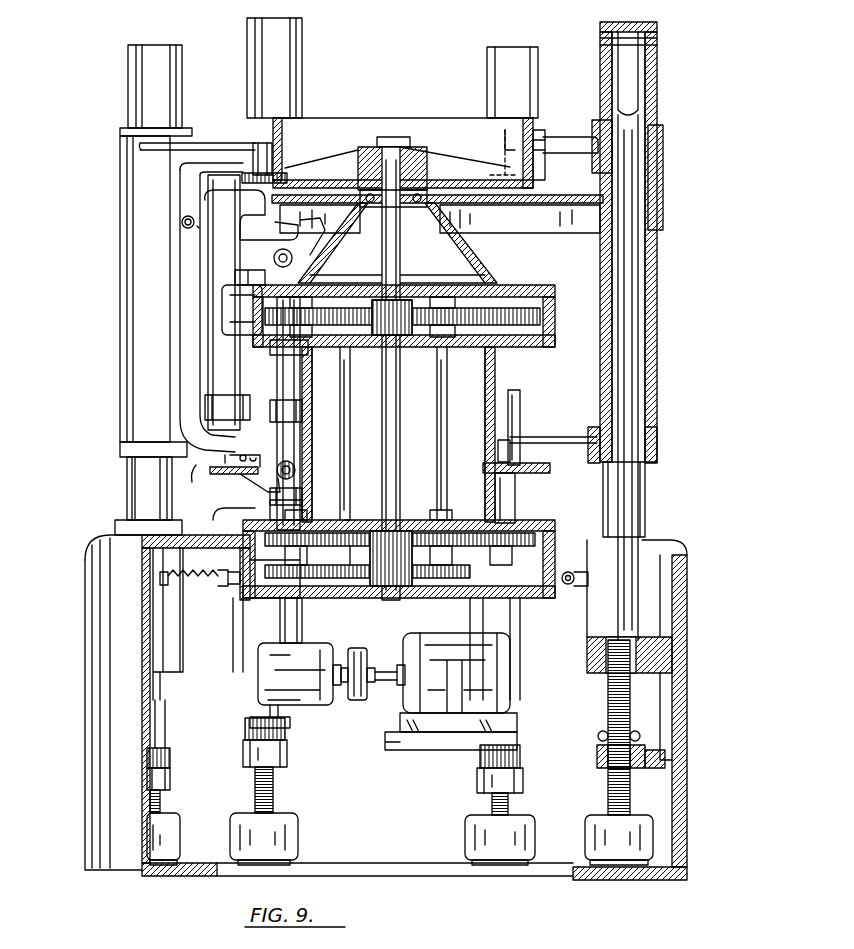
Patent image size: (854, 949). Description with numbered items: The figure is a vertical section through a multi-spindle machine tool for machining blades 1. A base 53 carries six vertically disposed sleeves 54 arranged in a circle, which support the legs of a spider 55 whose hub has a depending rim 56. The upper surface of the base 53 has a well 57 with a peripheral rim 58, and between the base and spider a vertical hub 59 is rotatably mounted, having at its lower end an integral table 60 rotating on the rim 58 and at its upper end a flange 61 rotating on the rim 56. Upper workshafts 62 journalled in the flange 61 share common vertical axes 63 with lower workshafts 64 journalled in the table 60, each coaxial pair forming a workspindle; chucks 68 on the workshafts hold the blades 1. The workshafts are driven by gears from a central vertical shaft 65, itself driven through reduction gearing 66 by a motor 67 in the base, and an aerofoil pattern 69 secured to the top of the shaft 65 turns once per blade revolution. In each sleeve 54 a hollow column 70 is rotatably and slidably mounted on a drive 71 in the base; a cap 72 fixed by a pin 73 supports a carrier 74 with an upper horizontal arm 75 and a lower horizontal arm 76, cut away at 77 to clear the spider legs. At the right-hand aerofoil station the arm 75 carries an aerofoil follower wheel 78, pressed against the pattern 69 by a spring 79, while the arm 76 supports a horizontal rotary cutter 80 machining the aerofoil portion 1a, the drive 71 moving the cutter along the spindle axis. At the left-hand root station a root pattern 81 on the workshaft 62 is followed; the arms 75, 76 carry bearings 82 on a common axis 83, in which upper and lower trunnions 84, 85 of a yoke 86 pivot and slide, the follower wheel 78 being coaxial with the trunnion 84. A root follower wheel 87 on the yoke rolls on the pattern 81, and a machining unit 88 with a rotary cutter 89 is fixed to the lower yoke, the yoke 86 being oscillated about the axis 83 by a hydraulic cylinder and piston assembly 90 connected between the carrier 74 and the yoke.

The blade 1 is at (320, 435).
The aerofoil portion 1a is at (500, 452).
The base 53 is at (386, 707).
The sleeve 54 is at (125, 483).
The spider 55 is at (545, 232).
The depending rim 56 is at (478, 280).
The well 57 is at (232, 600).
The peripheral rim 58 is at (545, 548).
The hub 59 is at (484, 403).
The table 60 is at (215, 520).
The flange 61 is at (240, 316).
The workshaft 62 is at (300, 387).
The vertical axis 63 is at (290, 378).
The workshaft 64 is at (270, 508).
The central vertical shaft 65 is at (395, 445).
The reduction gearing 66 is at (322, 643).
The motor 67 is at (432, 633).
The chuck 68 is at (302, 410).
The aerofoil pattern 69 is at (418, 118).
The column 70 is at (645, 477).
The drive 71 is at (588, 727).
The cap 72 is at (660, 102).
The pin 73 is at (660, 40).
The carrier 74 is at (125, 320).
The upper horizontal arm 75 is at (208, 148).
The lower horizontal arm 76 is at (568, 468).
The cut-away 77 is at (590, 203).
The aerofoil follower wheel 78 is at (288, 176).
The spring 79 is at (198, 588).
The rotary cutter 80 is at (530, 473).
The root pattern 81 is at (260, 276).
The bearing 82 is at (272, 157).
The vertical axis 83 is at (262, 95).
The upper trunnion 84 is at (282, 148).
The lower trunnion 85 is at (240, 425).
The yoke 86 is at (190, 353).
The root follower wheel 87 is at (275, 255).
The machining unit 88 is at (262, 485).
The rotary cutter 89 is at (296, 470).
The hydraulic cylinder and piston assembly 90 is at (182, 222).